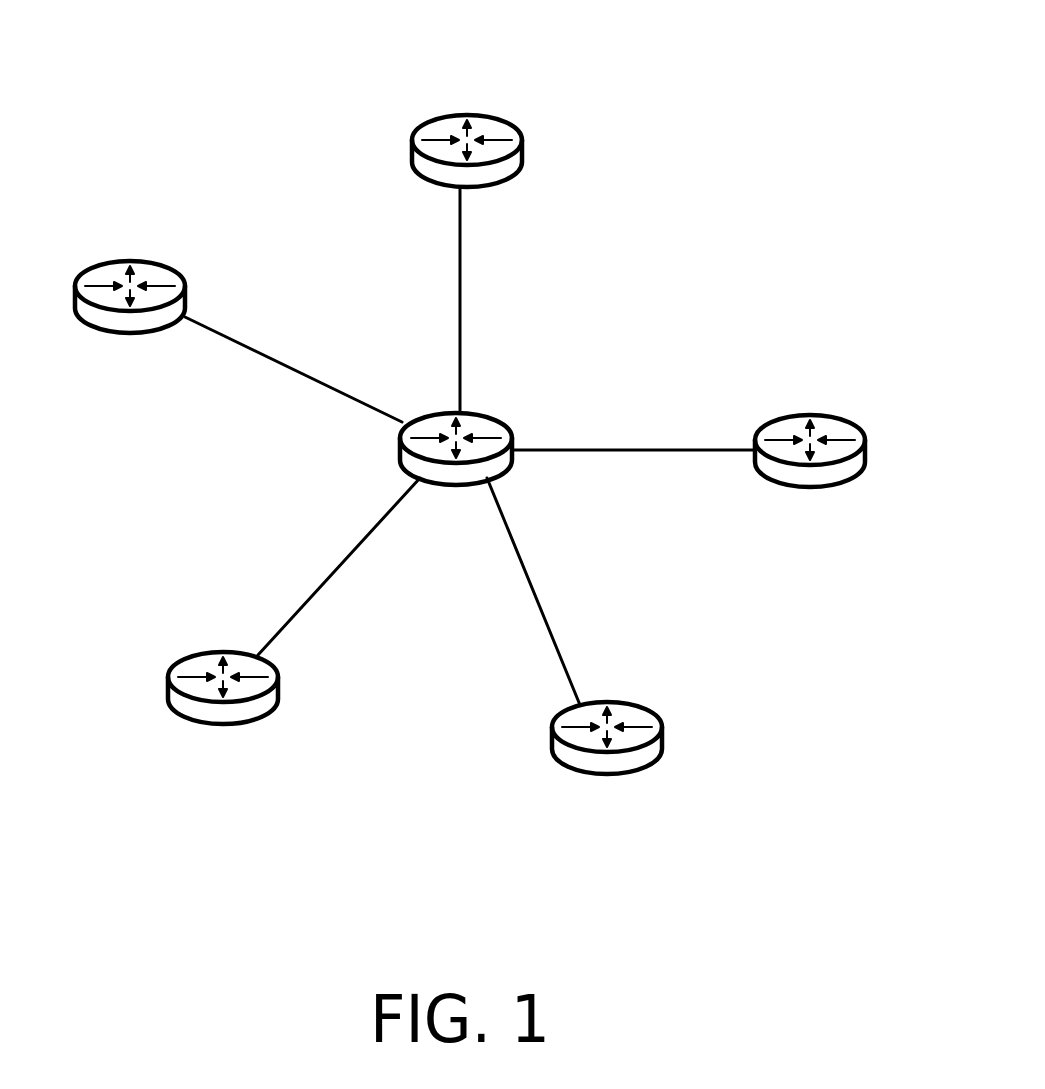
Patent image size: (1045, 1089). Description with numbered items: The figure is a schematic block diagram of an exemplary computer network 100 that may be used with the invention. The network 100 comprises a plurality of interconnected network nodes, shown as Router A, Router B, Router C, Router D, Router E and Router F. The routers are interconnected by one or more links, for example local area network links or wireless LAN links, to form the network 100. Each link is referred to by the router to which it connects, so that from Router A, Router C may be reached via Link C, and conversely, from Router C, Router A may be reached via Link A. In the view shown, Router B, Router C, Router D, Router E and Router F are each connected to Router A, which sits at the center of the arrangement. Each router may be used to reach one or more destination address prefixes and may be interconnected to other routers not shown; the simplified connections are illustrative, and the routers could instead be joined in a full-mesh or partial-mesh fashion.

The computer network 100 is at (812, 92).
The Router A is at (432, 412).
The Router B is at (792, 413).
The Router C is at (448, 117).
The Router D is at (92, 265).
The Router E is at (253, 725).
The Router F is at (643, 770).